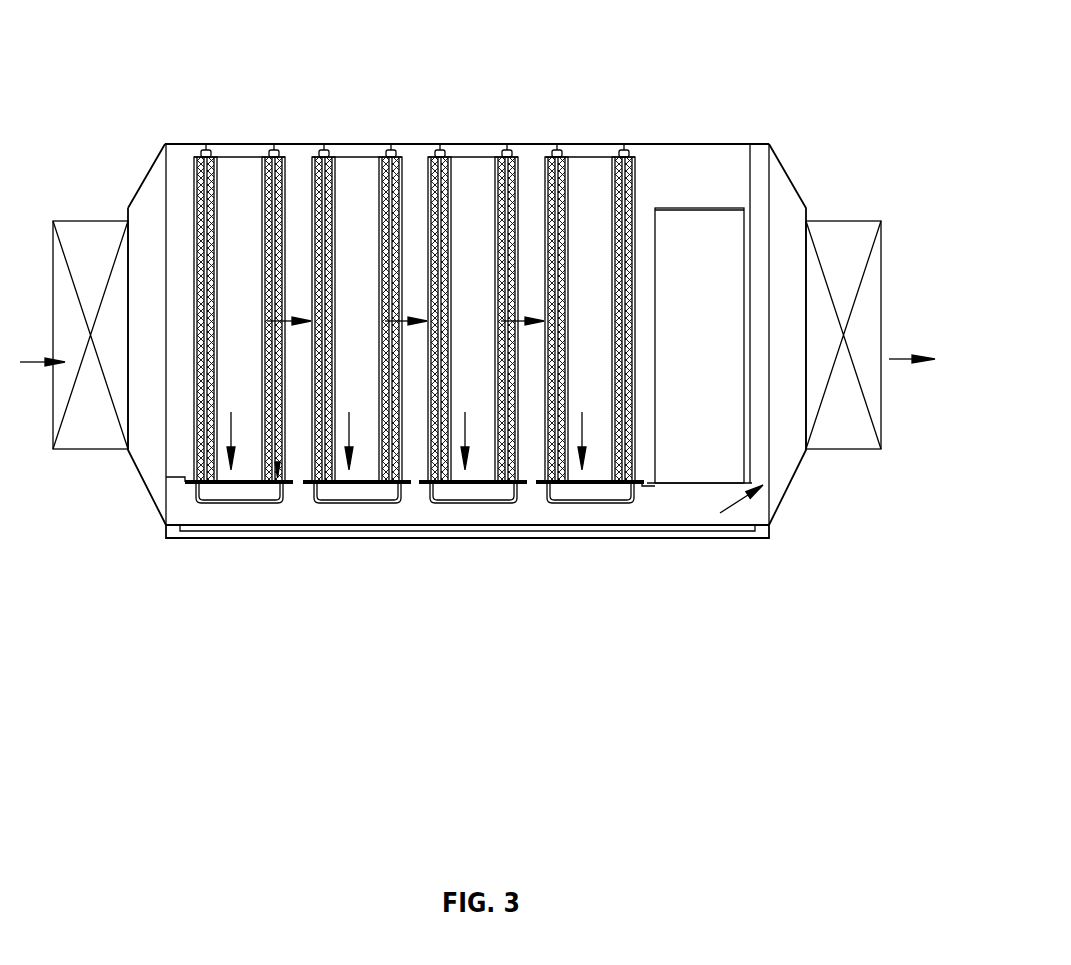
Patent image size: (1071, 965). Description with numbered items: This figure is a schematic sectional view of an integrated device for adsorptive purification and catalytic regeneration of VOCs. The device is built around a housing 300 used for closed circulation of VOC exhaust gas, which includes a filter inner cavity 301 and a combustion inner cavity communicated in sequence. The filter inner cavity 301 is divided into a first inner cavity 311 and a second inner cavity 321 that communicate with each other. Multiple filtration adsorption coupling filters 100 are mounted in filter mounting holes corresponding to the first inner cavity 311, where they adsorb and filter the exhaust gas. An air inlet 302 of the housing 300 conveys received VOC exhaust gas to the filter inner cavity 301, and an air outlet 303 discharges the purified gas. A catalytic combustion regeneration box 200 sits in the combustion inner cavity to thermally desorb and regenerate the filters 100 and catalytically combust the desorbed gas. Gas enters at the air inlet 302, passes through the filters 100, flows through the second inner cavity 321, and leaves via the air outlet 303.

The filtration adsorption coupling filter 100 is at (204, 148).
The catalytic combustion regeneration box 200 is at (657, 258).
The housing 300 is at (703, 143).
The filter inner cavity 301 is at (417, 55).
The air inlet 302 is at (107, 245).
The air outlet 303 is at (845, 230).
The first inner cavity 311 is at (350, 150).
The second inner cavity 321 is at (518, 512).